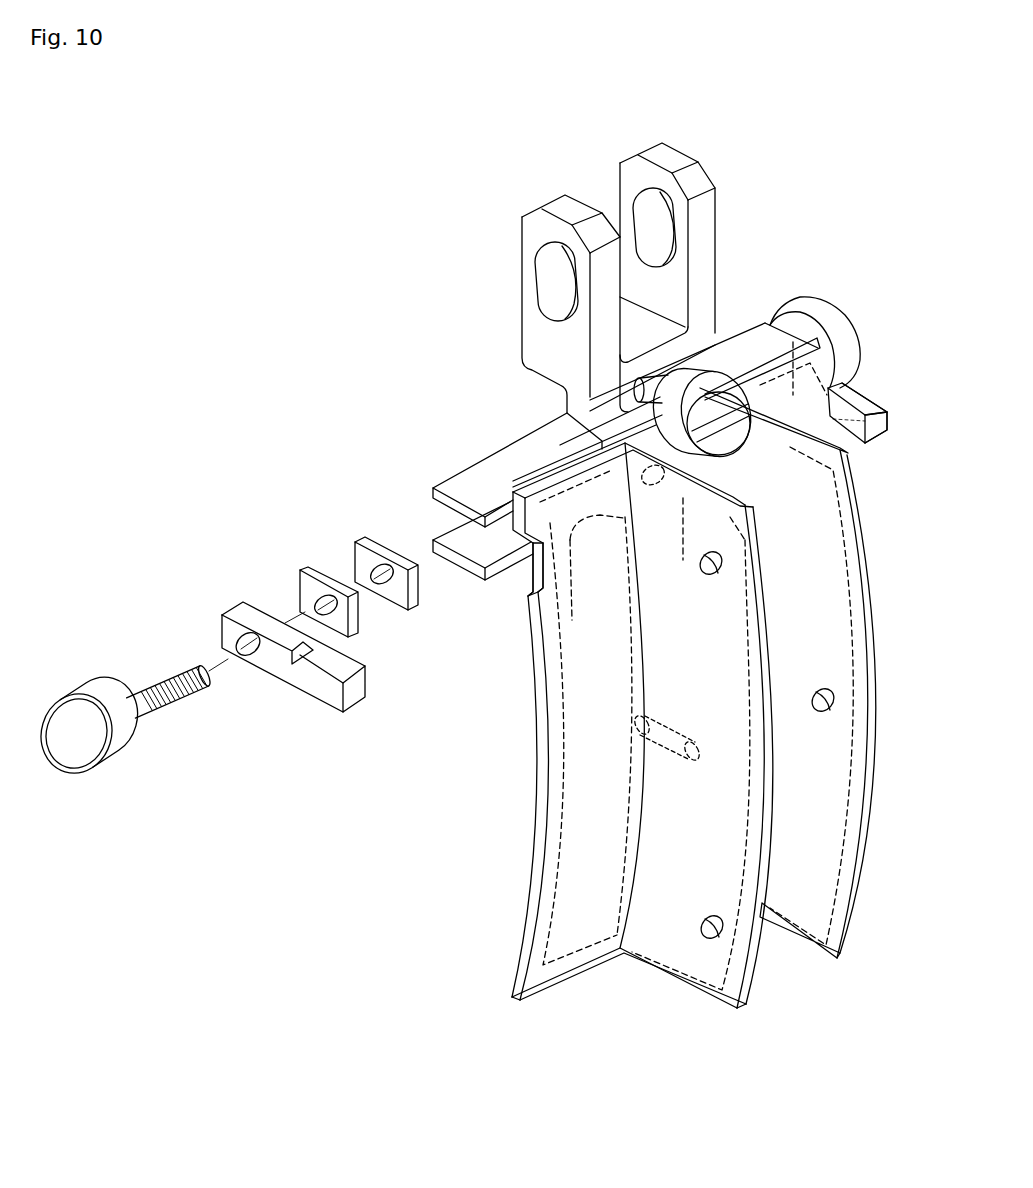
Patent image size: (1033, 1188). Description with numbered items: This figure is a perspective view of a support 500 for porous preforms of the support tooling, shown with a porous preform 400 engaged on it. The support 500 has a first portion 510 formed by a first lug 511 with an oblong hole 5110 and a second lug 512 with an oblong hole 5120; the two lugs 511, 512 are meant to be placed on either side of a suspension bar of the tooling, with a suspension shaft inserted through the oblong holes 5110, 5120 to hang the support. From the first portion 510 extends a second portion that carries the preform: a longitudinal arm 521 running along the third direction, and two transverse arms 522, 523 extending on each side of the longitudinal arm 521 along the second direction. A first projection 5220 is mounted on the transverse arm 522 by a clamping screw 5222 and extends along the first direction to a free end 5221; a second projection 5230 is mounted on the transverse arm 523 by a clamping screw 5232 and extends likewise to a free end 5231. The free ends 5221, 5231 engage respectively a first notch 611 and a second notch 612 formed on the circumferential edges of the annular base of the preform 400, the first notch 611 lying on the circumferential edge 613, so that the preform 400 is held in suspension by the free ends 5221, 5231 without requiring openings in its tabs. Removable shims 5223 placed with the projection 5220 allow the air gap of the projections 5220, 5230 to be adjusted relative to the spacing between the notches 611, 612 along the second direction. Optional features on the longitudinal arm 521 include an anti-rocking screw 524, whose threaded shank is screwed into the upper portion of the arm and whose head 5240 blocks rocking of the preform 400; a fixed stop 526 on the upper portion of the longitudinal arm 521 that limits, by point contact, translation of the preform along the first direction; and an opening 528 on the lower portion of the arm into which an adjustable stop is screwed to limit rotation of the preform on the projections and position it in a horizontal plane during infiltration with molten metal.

The support 500 is at (515, 181).
The first portion 510 is at (724, 196).
The first lug 511 is at (535, 340).
The second lug 512 is at (703, 236).
The oblong hole 5110 is at (552, 273).
The oblong hole 5120 is at (650, 203).
The transverse arm 522 is at (516, 455).
The transverse arm 523 is at (750, 328).
The clamping screw 5232 is at (835, 321).
The second projection 5230 is at (858, 390).
The second notch 612 is at (888, 413).
The free end 5231 is at (880, 432).
The anti-rocking screw 524 is at (752, 447).
The head 5240 is at (713, 383).
The bent plate 400 is at (520, 847).
The first notch 611 is at (530, 586).
The circumferential edge 613 is at (515, 978).
The fixed stop 526 is at (650, 481).
The opening 528 is at (692, 758).
The longitudinal arm 521 is at (677, 618).
The first projection 5220 is at (265, 668).
The free end 5221 is at (327, 698).
The removable shim 5223 is at (363, 537).
The clamping screw 5222 is at (80, 757).